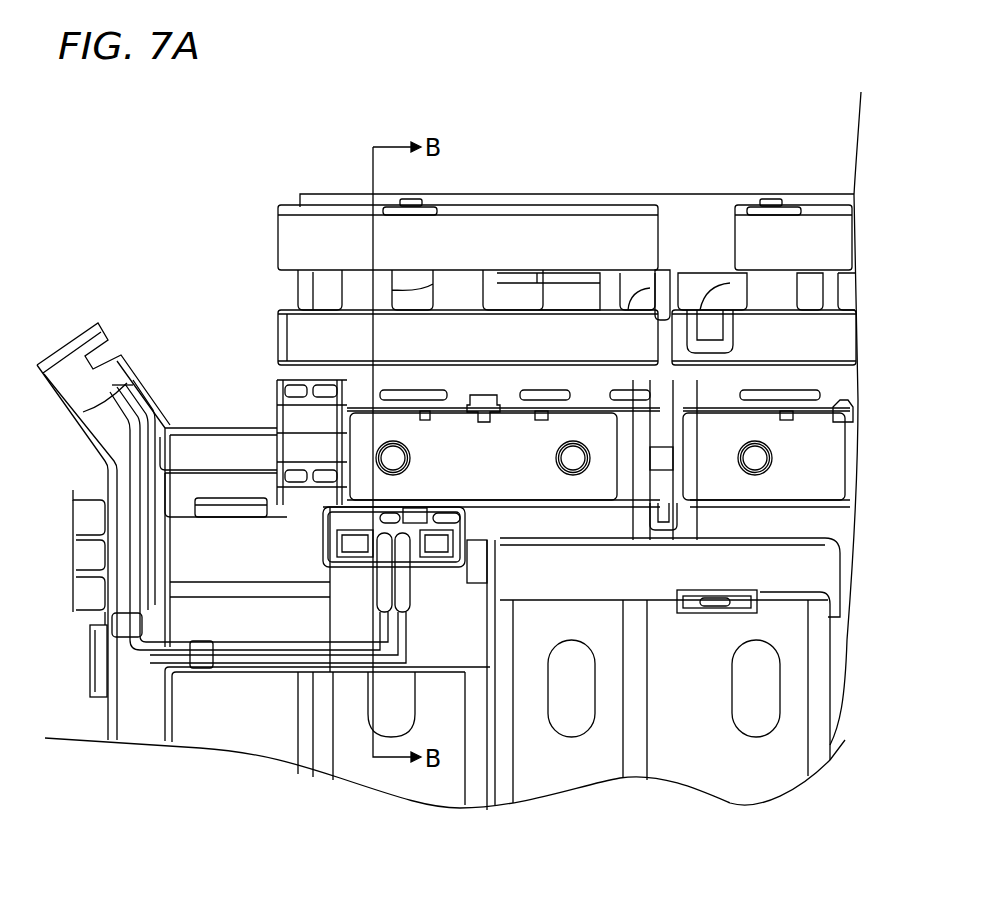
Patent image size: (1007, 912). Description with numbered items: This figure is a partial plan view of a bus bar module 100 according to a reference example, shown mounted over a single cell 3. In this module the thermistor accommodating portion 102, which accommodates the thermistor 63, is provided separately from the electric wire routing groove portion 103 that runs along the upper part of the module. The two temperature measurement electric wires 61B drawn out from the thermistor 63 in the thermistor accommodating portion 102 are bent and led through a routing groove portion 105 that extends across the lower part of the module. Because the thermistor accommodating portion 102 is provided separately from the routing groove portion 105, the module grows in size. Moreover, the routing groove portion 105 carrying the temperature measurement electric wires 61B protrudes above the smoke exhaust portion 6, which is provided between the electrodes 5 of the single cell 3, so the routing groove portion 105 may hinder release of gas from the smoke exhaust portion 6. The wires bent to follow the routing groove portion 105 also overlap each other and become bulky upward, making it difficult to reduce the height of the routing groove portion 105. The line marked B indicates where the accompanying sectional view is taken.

The single cell 3 is at (394, 773).
The electrode 5 is at (395, 455).
The smoke exhaust portion 6 is at (378, 713).
The temperature measurement electric wire 61B is at (287, 643).
The thermistor 63 is at (360, 541).
The bus bar module 100 is at (641, 200).
The thermistor accommodating portion 102 is at (437, 573).
The electric wire routing groove portion 103 is at (521, 340).
The routing groove portion 105 is at (310, 623).